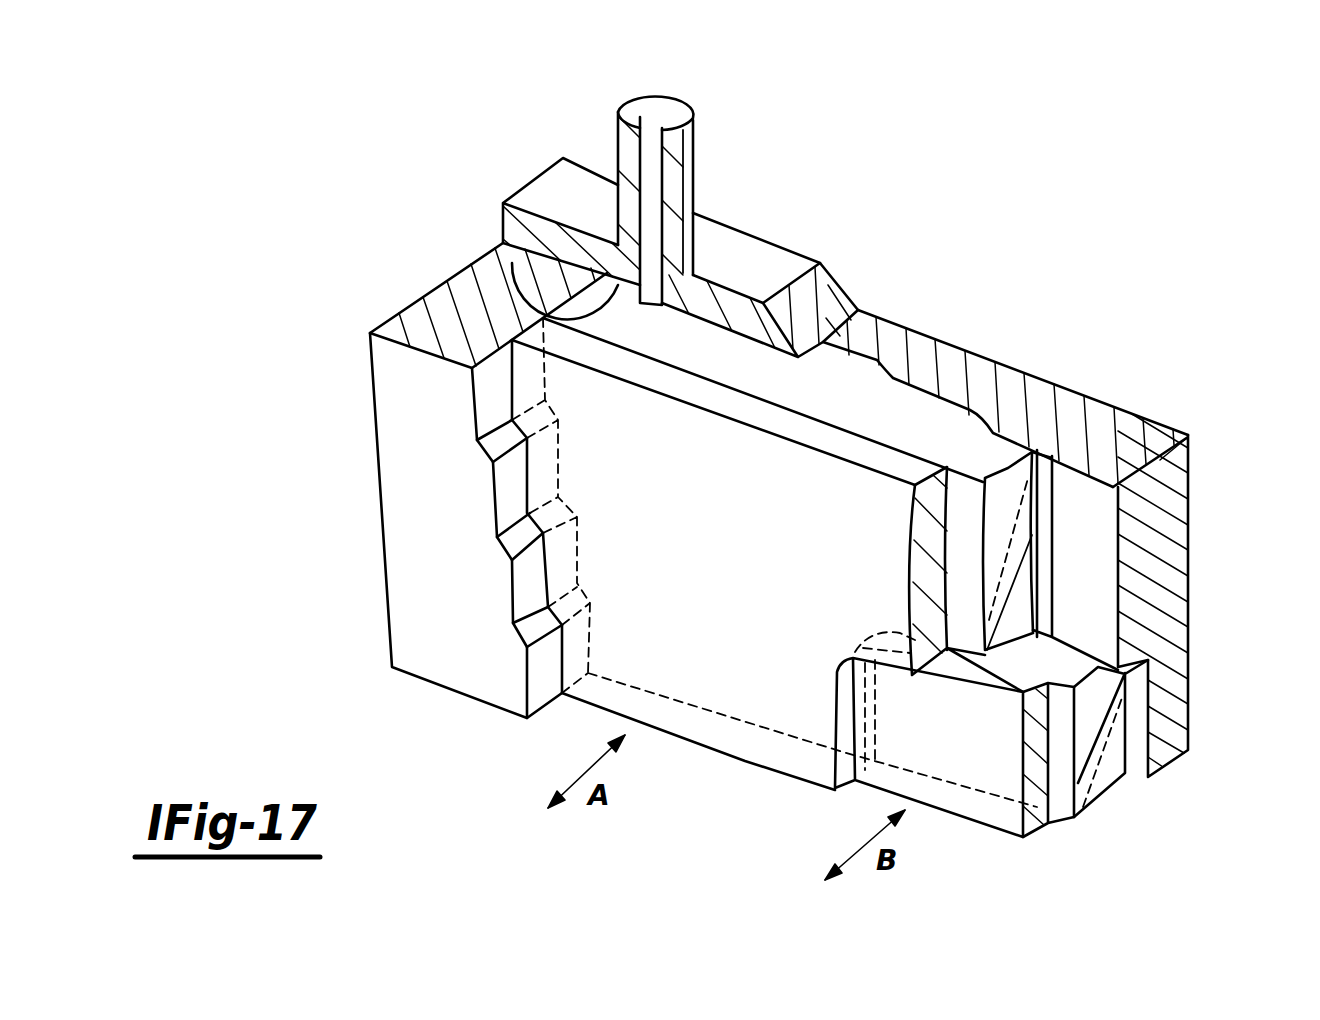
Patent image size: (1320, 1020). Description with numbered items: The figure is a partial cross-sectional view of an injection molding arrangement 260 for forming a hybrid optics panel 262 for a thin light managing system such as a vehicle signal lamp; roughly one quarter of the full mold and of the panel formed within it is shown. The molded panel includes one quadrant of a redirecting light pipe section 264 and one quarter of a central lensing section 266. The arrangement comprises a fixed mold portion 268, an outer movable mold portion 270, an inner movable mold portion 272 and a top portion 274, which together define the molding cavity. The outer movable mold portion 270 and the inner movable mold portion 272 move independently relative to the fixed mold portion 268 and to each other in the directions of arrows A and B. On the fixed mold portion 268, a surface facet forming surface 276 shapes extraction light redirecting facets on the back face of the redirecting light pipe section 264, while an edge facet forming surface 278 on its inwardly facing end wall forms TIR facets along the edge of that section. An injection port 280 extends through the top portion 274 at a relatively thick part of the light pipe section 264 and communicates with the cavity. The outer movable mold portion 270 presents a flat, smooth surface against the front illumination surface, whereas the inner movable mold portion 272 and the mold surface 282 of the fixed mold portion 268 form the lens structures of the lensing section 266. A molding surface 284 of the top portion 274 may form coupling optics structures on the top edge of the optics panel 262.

The injection molding arrangement 260 is at (450, 190).
The hybrid optics panel 262 is at (1050, 528).
The redirecting light pipe section 264 is at (950, 425).
The central lensing section 266 is at (1095, 805).
The fixed mold portion 268 is at (1137, 407).
The outer movable mold portion 270 is at (745, 765).
The inner movable mold portion 272 is at (977, 828).
The top portion 274 is at (792, 241).
The surface facet forming surface 276 is at (1088, 617).
The edge facet forming surface 278 is at (524, 603).
The injection port 280 is at (658, 120).
The mold surface 282 is at (1058, 773).
The molding surface 284 is at (505, 258).